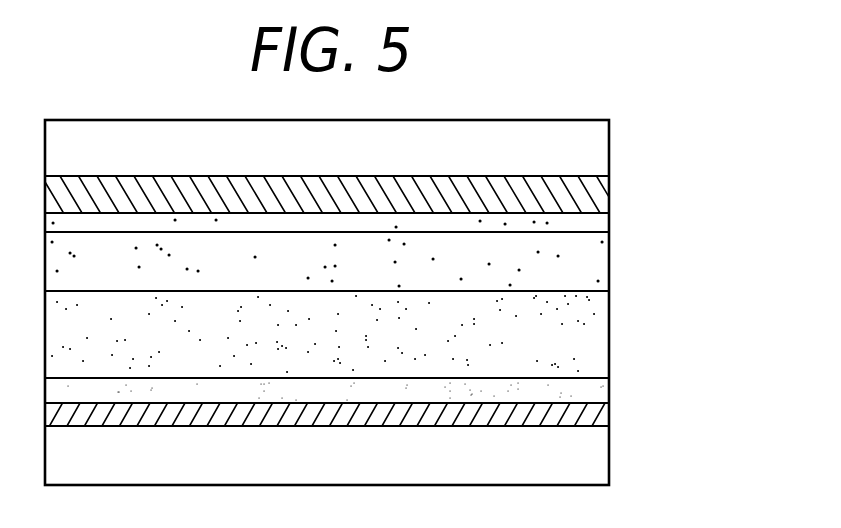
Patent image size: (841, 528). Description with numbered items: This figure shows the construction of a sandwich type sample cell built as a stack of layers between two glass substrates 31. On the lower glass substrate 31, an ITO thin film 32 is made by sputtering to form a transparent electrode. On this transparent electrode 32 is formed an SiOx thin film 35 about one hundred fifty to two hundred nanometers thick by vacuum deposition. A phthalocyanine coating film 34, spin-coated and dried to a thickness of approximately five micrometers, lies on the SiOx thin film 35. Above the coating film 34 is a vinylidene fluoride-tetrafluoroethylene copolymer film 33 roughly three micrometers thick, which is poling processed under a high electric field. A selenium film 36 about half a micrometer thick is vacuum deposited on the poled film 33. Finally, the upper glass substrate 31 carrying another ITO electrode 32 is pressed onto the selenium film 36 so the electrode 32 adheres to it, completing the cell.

The glass substrate 31 is at (595, 150).
The ITO thin film 32 is at (595, 200).
The vinylidene fluoride-tetrafluoroethylene copolymer film 33 is at (595, 243).
The phthalocyanine coating film 34 is at (598, 323).
The SiOx thin film 35 is at (598, 390).
The selenium film 36 is at (592, 223).